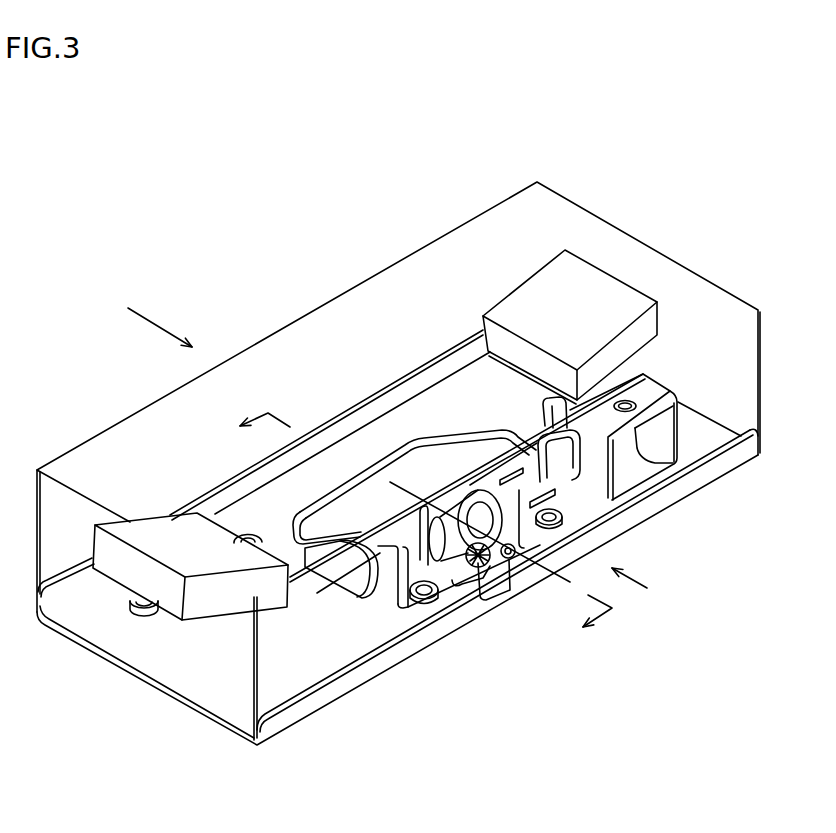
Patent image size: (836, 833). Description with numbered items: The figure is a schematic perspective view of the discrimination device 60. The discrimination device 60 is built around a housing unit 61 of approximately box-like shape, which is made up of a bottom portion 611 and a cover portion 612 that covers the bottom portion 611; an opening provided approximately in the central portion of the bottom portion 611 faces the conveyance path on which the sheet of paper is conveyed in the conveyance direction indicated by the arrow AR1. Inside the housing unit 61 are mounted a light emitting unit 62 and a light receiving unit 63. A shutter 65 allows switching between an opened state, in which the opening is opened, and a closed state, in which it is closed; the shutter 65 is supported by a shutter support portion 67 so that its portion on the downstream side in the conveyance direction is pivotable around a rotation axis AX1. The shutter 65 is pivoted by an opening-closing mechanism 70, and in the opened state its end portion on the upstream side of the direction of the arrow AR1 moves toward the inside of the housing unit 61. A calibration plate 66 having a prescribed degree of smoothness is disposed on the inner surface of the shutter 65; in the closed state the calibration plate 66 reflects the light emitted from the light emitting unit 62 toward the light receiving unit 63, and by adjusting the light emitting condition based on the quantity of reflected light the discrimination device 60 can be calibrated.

The discrimination device 60 is at (713, 125).
The housing unit 61 is at (305, 282).
The bottom portion 611 is at (205, 718).
The cover portion 612 is at (53, 465).
The light emitting unit 62 is at (187, 537).
The light receiving unit 63 is at (592, 308).
The shutter 65 is at (367, 467).
The calibration plate 66 is at (482, 455).
The shutter support portion 67 is at (660, 398).
The opening-closing mechanism 70 is at (500, 567).
The arrow indicating conveyance direction AR1 is at (163, 330).
The rotation axis AX1 is at (353, 602).